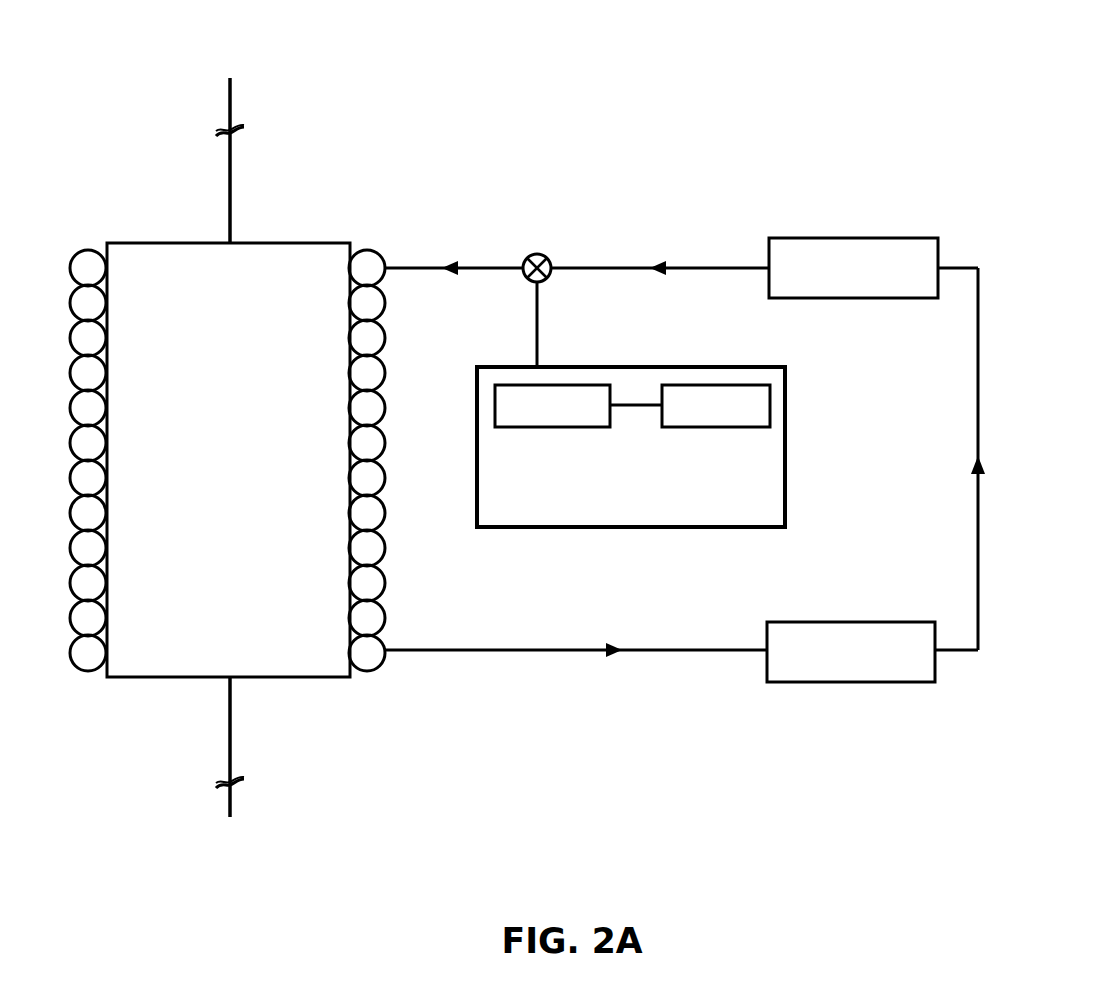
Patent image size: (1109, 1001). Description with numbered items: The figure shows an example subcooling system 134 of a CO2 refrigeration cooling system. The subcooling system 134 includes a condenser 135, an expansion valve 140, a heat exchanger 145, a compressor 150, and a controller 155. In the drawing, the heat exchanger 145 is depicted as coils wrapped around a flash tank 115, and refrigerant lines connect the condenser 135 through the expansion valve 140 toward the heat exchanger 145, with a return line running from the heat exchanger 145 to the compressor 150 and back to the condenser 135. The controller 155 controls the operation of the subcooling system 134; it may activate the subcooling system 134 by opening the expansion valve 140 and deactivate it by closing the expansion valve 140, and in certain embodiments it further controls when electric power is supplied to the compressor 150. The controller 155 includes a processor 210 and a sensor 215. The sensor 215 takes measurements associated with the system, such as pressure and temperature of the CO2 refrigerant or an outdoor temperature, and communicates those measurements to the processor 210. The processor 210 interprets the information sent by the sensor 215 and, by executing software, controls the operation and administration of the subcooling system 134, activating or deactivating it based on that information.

The subcooling system 134 is at (527, 55).
The flash tank 115 is at (272, 243).
The heat exchanger 145 is at (386, 618).
The expansion valve 140 is at (537, 253).
The condenser 135 is at (853, 238).
The compressor 150 is at (848, 682).
The controller 155 is at (690, 404).
The processor 210 is at (552, 427).
The sensor 215 is at (718, 427).